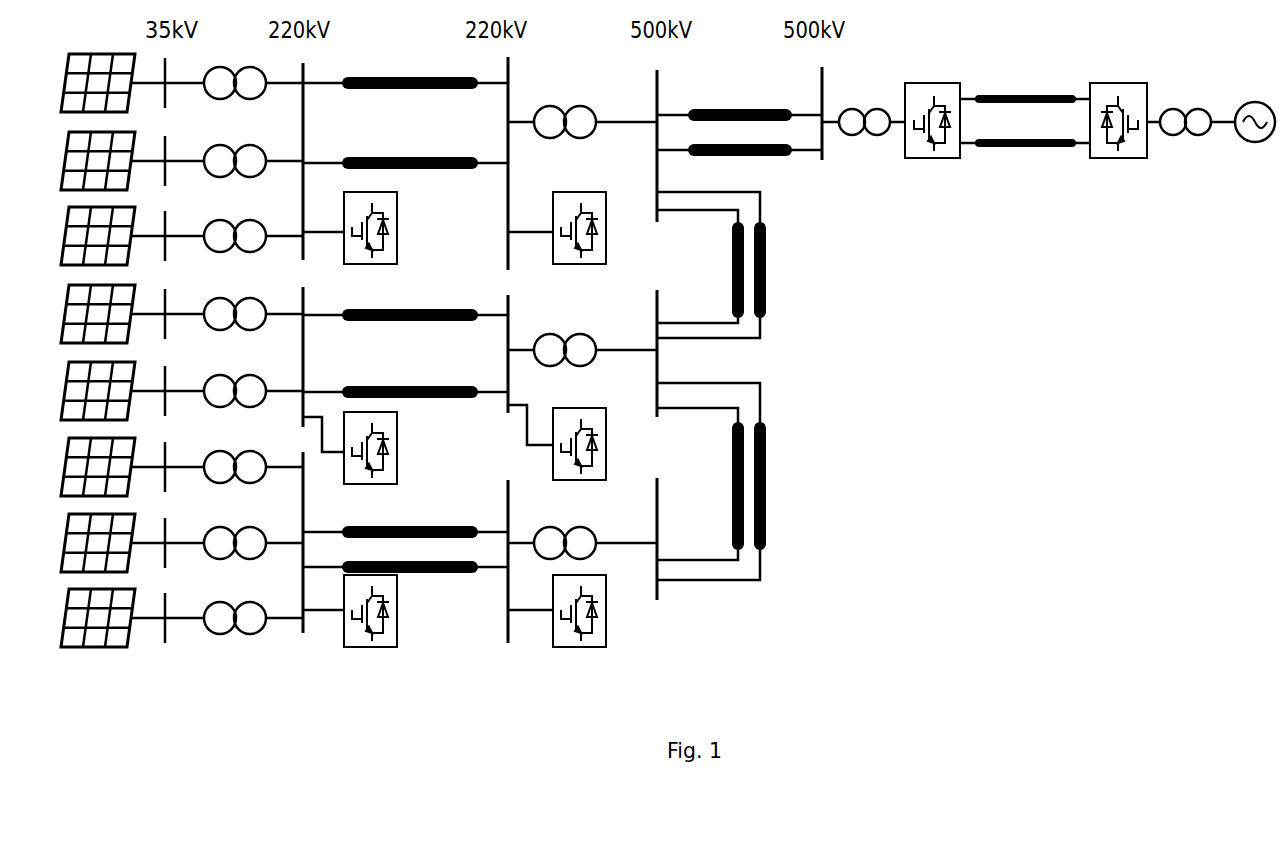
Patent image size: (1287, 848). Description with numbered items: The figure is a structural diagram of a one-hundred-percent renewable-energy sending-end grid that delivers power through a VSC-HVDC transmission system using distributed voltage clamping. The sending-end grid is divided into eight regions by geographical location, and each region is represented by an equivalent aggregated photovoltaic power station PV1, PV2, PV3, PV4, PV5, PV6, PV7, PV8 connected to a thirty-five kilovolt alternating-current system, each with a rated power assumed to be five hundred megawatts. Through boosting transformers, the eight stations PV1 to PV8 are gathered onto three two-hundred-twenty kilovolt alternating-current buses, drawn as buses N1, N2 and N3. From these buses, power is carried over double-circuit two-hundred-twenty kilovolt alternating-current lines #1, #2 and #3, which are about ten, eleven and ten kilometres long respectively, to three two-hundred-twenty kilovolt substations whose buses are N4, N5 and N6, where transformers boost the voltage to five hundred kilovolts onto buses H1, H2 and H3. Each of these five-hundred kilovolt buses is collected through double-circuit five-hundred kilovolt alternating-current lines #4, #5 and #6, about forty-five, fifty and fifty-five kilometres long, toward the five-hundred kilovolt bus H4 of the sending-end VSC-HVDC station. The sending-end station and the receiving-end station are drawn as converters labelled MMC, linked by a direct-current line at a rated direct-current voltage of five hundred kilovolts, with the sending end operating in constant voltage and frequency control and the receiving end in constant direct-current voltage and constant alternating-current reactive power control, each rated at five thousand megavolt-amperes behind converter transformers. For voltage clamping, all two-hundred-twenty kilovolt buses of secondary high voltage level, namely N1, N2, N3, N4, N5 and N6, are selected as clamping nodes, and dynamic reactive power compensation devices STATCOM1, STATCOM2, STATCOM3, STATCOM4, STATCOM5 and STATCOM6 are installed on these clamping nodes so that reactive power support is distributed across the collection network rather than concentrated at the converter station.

The photovoltaic station 1 with step-up transformer PV1 is at (182, 90).
The photovoltaic station 2 with step-up transformer PV2 is at (182, 168).
The photovoltaic station 3 with step-up transformer PV3 is at (182, 243).
The photovoltaic station 4 with step-up transformer PV4 is at (182, 321).
The photovoltaic station 5 with step-up transformer PV5 is at (182, 398).
The photovoltaic station 6 with step-up transformer PV6 is at (182, 474).
The photovoltaic station 7 with step-up transformer PV7 is at (182, 550).
The photovoltaic station 8 with step-up transformer PV8 is at (182, 625).
The clamping node N1 is at (321, 161).
The clamping node N2 is at (322, 357).
The clamping node N3 is at (321, 542).
The clamping node N4 is at (490, 163).
The clamping node N5 is at (490, 354).
The clamping node N6 is at (494, 561).
The 500 kV bus H1 is at (641, 146).
The 500 kV bus H2 is at (641, 353).
The 500 kV bus H3 is at (643, 541).
The 500 kV bus H4 is at (829, 129).
The 220 kV alternating-current line 1 is at (405, 123).
The 220 kV alternating-current line 2 is at (405, 353).
The 220 kV alternating-current line 3 is at (405, 549).
The 500 kV alternating-current line 4 is at (734, 481).
The 500 kV alternating-current line 5 is at (731, 265).
The 500 kV alternating-current line 6 is at (739, 115).
The dynamic reactive power compensation device STATCOM1 is at (378, 247).
The dynamic reactive power compensation device STATCOM2 is at (378, 464).
The dynamic reactive power compensation device STATCOM3 is at (378, 626).
The dynamic reactive power compensation device STATCOM4 is at (576, 246).
The dynamic reactive power compensation device STATCOM5 is at (578, 461).
The dynamic reactive power compensation device STATCOM6 is at (578, 626).
The modular multilevel converter HVDC link MMC is at (1048, 108).